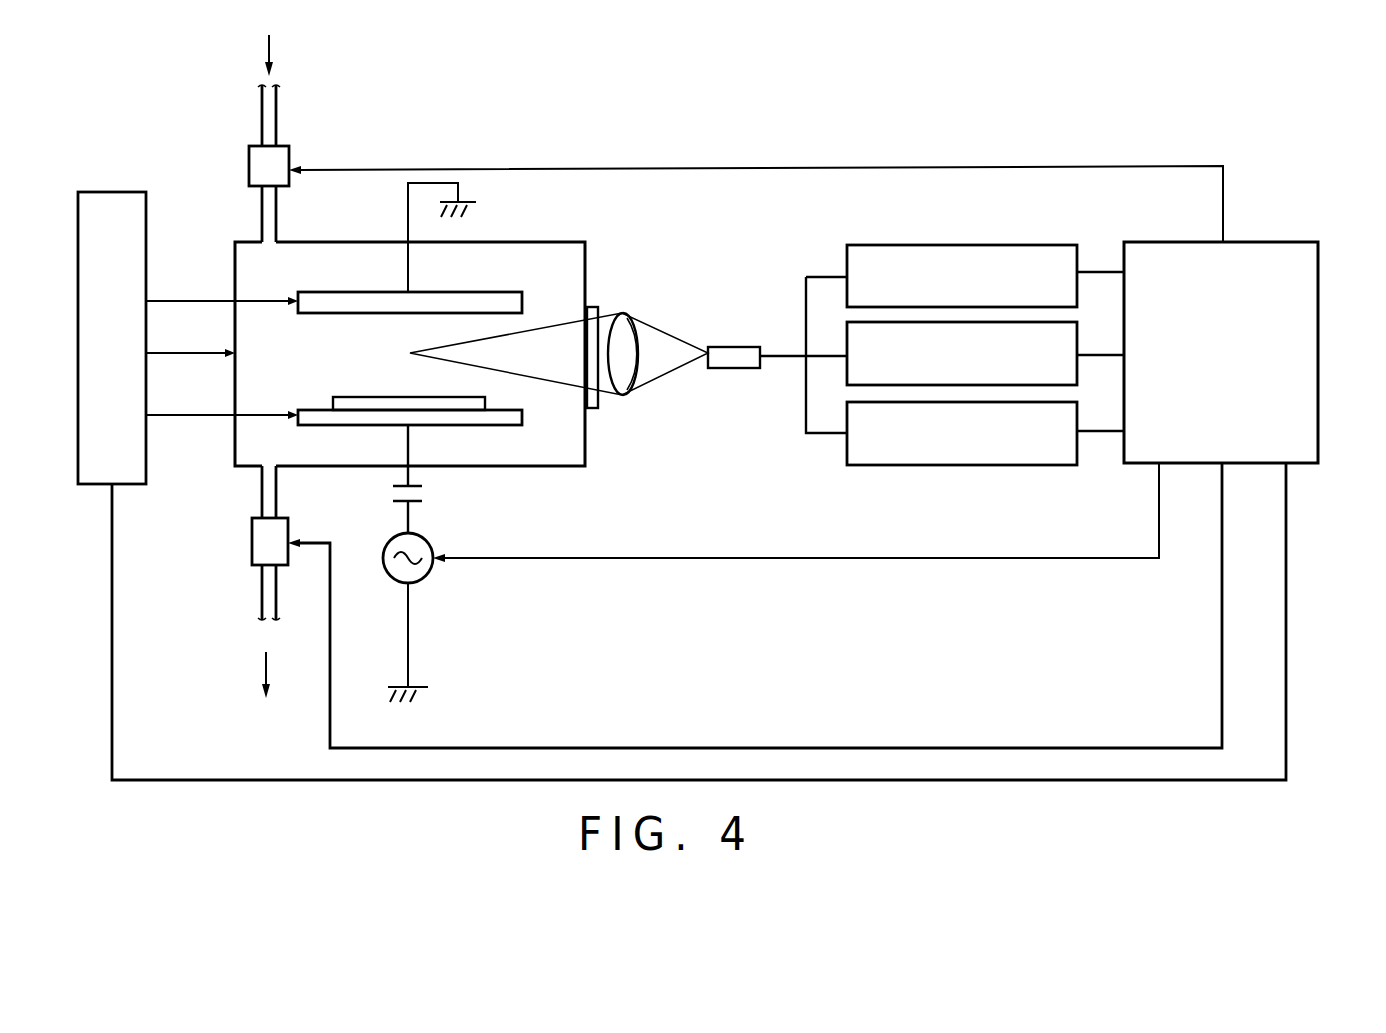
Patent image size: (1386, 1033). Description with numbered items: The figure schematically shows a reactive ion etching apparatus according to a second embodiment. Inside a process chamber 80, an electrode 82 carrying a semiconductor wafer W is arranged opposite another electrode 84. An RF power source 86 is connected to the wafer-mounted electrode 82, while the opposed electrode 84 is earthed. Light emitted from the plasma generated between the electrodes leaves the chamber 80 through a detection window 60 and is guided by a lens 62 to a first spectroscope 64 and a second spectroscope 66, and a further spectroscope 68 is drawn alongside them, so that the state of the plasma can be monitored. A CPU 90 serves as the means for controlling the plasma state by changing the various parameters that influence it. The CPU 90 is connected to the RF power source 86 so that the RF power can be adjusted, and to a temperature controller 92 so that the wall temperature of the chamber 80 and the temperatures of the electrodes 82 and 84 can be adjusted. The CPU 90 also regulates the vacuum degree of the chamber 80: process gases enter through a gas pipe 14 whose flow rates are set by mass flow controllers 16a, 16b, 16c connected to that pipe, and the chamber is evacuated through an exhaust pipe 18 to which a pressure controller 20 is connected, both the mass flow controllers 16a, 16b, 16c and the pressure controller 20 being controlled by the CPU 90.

The gas pipe 14 is at (262, 240).
The mass flow controller 16a is at (336, 152).
The mass flow controller 16b is at (269, 166).
The mass flow controller 16c is at (289, 158).
The exhaust pipe 18 is at (262, 485).
The pressure controller 20 is at (252, 540).
The detection window 60 is at (589, 412).
The lens 62 is at (627, 377).
The first spectroscope 64 is at (887, 245).
The second spectroscope 66 is at (847, 345).
The third spectroscope 68 is at (847, 447).
The process chamber 80 is at (507, 242).
The electrode 82 is at (490, 427).
The electrode 84 is at (345, 313).
The RF power source 86 is at (423, 537).
The CPU 90 is at (1318, 358).
The temperature controller 92 is at (82, 484).
The semiconductor wafer W is at (378, 397).